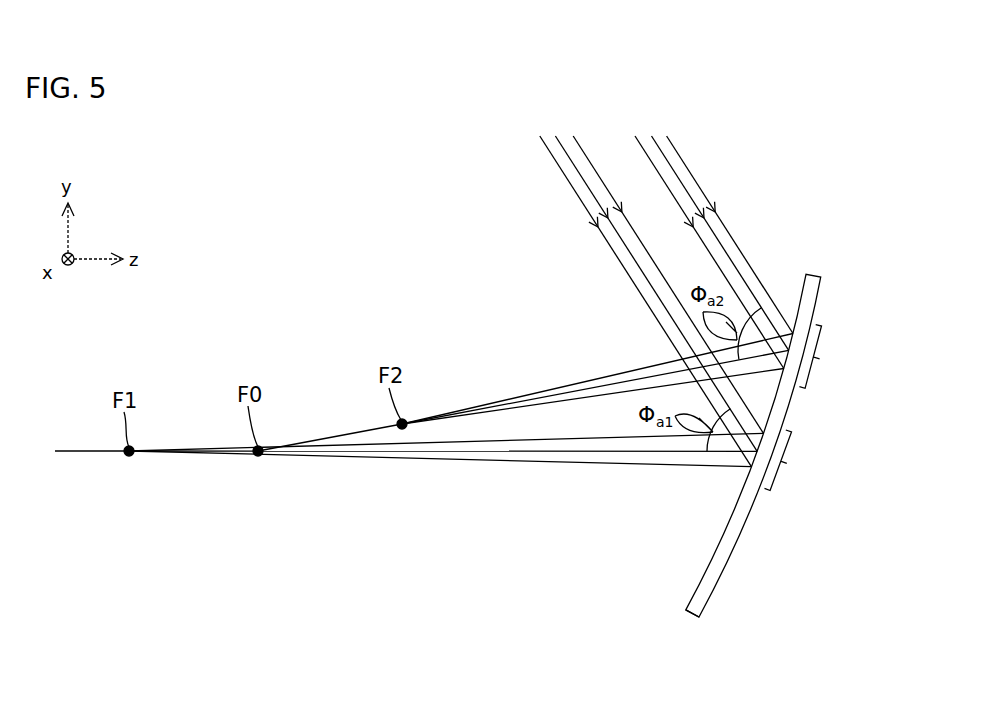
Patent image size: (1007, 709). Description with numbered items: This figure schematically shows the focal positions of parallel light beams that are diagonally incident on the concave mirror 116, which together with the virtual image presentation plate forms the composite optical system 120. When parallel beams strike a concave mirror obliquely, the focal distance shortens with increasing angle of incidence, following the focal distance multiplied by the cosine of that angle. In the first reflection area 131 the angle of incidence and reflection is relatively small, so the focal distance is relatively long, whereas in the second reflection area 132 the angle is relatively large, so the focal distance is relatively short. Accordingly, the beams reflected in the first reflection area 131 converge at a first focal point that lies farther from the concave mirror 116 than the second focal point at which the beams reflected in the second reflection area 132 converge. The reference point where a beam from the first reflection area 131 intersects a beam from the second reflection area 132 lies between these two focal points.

The composite optical system 120 is at (793, 563).
The concave mirror 116 is at (692, 617).
The first reflection area 131 is at (804, 460).
The second reflection area 132 is at (835, 357).